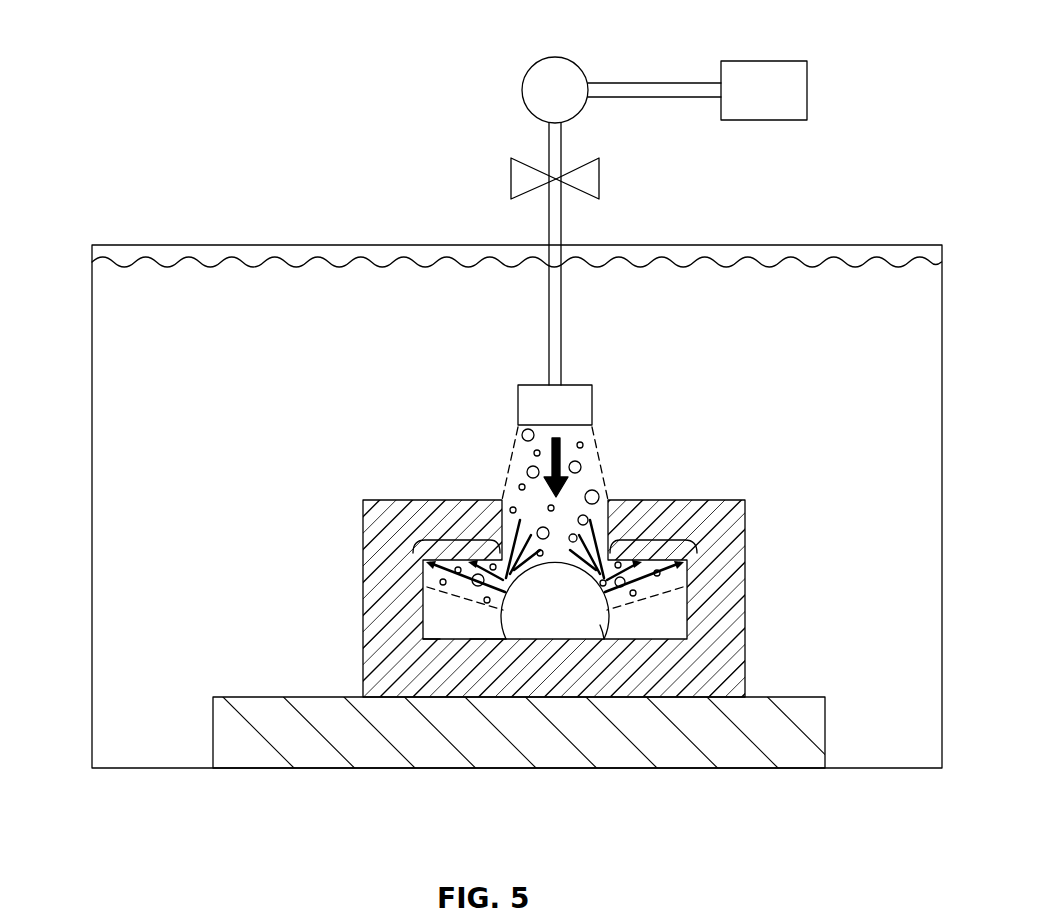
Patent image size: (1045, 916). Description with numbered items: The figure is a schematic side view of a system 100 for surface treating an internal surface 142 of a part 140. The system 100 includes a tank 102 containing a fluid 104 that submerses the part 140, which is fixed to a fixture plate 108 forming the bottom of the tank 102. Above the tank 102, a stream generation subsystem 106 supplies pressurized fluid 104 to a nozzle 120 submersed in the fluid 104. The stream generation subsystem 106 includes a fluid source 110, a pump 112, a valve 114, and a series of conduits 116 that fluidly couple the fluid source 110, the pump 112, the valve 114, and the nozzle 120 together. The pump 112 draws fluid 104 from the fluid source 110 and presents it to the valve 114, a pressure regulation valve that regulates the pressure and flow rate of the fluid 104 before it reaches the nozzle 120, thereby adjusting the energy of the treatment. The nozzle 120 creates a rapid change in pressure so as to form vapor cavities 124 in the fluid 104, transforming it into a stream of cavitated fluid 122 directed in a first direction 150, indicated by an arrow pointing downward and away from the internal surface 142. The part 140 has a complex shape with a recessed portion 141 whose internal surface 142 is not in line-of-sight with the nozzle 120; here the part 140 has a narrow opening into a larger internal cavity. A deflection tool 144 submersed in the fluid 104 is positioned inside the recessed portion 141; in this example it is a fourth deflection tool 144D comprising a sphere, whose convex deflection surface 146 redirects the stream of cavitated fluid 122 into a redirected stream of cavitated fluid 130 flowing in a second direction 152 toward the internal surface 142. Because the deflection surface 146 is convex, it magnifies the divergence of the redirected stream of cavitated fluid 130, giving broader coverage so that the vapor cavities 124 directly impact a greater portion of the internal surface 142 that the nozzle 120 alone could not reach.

The system 100 is at (875, 193).
The tank 102 is at (92, 430).
The fluid 104 is at (263, 250).
The stream generation subsystem 106 is at (452, 80).
The fixture plate 108 is at (232, 696).
The fluid source 110 is at (808, 76).
The pump 112 is at (575, 62).
The valve 114 is at (511, 178).
The conduits 116 is at (636, 83).
The nozzle 120 is at (578, 383).
The stream of cavitated fluid 122 is at (555, 498).
The vapor cavities 124 is at (576, 469).
The redirected stream of cavitated fluid 130 is at (453, 599).
The part 140 is at (750, 538).
The recessed portion 141 is at (676, 605).
The internal surface 142 is at (425, 636).
The deflection tool 144 is at (496, 637).
The fourth deflection tool 144D is at (612, 634).
The deflection surface 146 is at (490, 633).
The first direction 150 is at (572, 430).
The second direction 152 is at (448, 542).